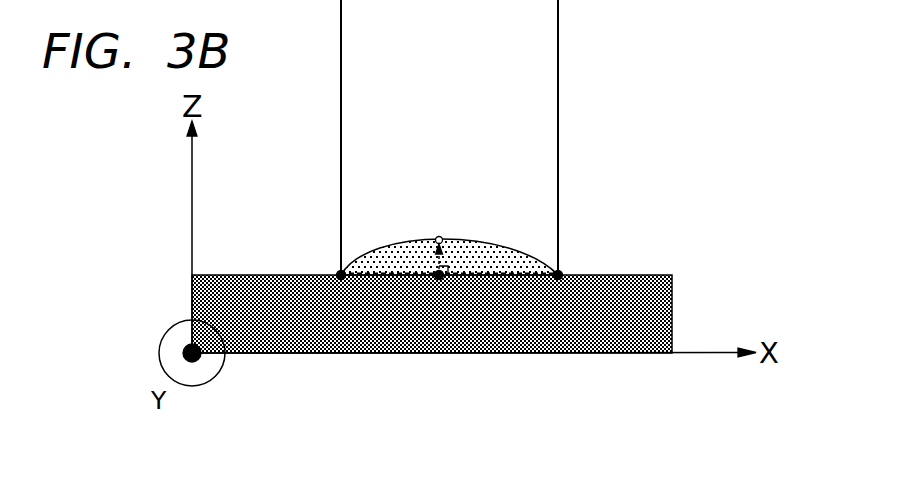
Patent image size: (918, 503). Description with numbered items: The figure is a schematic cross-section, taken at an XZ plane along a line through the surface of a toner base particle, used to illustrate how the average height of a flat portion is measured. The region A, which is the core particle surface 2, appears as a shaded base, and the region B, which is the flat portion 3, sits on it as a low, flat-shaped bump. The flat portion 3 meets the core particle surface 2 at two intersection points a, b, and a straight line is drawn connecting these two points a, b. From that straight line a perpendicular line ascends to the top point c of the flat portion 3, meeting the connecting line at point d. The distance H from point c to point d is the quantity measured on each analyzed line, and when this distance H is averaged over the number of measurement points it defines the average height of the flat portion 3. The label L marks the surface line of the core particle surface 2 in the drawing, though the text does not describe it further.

The region A (core particle surface) 2 is at (667, 300).
The region B (flat portion) 3 is at (491, 247).
The intersection point a is at (340, 274).
The intersection point b is at (559, 273).
The top point c is at (439, 237).
The point d is at (436, 272).
The distance H is at (434, 267).
The surface of substrate L is at (657, 274).